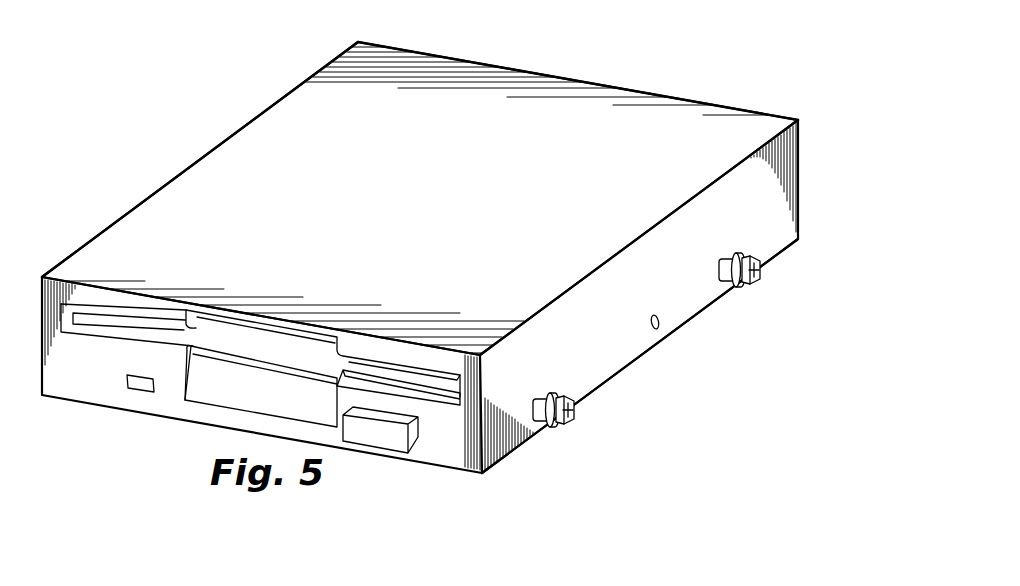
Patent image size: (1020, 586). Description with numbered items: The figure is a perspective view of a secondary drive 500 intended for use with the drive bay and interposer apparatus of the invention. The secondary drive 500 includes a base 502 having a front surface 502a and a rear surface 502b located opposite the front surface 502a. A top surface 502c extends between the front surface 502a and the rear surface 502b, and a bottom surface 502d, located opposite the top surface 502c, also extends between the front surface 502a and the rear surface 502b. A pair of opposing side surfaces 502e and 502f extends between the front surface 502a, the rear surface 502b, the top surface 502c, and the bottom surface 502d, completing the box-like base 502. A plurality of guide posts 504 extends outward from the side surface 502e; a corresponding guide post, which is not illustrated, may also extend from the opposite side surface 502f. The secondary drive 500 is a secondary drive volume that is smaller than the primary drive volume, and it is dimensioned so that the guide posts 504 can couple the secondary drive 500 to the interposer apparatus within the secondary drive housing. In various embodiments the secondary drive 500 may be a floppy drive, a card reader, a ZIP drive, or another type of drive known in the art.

The secondary drive 500 is at (674, 59).
The base 502 is at (254, 114).
The front surface 502a is at (108, 396).
The rear surface 502b is at (583, 80).
The top surface 502c is at (447, 212).
The bottom surface 502d is at (640, 356).
The side surface 502e is at (684, 313).
The side surface 502f is at (192, 163).
The guide posts 504 is at (759, 279).